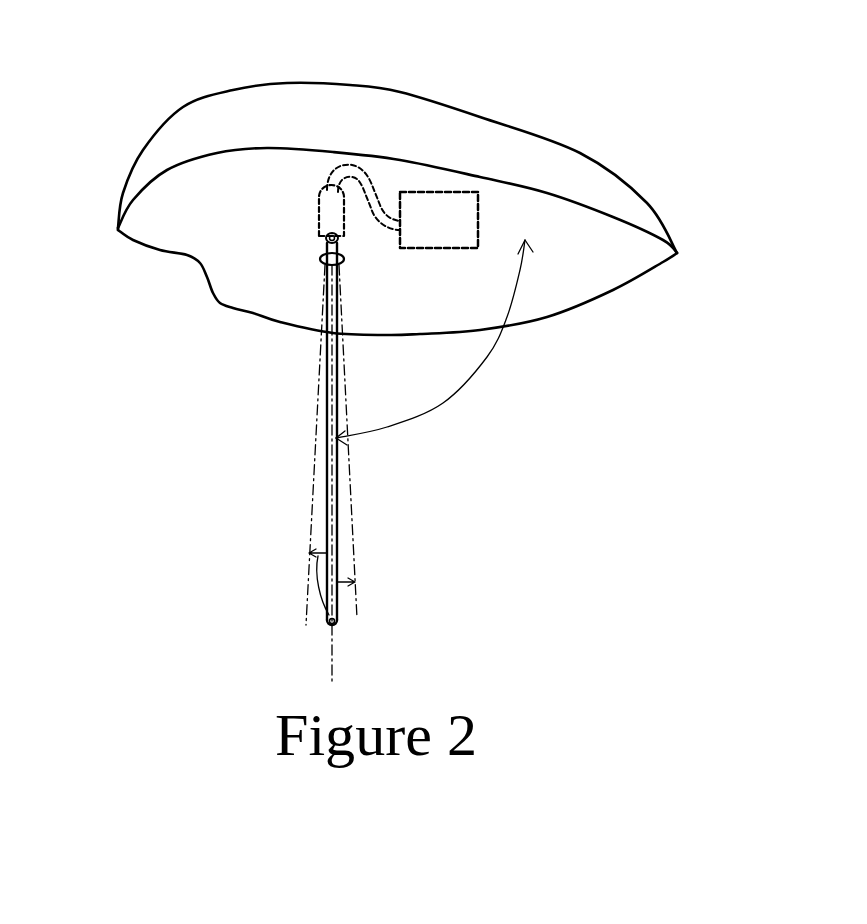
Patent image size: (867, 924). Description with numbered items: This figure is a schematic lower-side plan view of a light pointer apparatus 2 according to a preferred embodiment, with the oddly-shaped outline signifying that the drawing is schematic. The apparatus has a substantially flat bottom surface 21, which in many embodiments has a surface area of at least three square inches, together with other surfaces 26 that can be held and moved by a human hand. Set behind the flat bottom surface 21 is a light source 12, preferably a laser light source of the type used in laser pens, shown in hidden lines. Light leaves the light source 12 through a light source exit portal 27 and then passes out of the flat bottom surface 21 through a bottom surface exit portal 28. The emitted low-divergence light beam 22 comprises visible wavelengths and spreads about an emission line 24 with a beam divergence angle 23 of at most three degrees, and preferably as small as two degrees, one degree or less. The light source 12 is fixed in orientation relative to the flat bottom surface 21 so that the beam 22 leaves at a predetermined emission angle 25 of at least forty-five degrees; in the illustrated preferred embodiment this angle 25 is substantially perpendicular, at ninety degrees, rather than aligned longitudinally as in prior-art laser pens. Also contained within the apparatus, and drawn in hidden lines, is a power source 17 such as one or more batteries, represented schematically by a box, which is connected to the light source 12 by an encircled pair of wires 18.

The light pointer apparatus 2 is at (155, 65).
The surfaces 26 is at (293, 136).
The substantially flat bottom surface 21 is at (260, 227).
The pair of wires 18 is at (330, 210).
The light source 12 is at (379, 200).
The power source 17 is at (455, 207).
The light source exit portal 27 is at (330, 242).
The bottom surface exit portal 28 is at (327, 256).
The low-divergence light beam 22 is at (328, 530).
The beam divergence angle 23 is at (340, 590).
The emission line 24 is at (330, 664).
The predetermined emission angle 25 is at (443, 403).